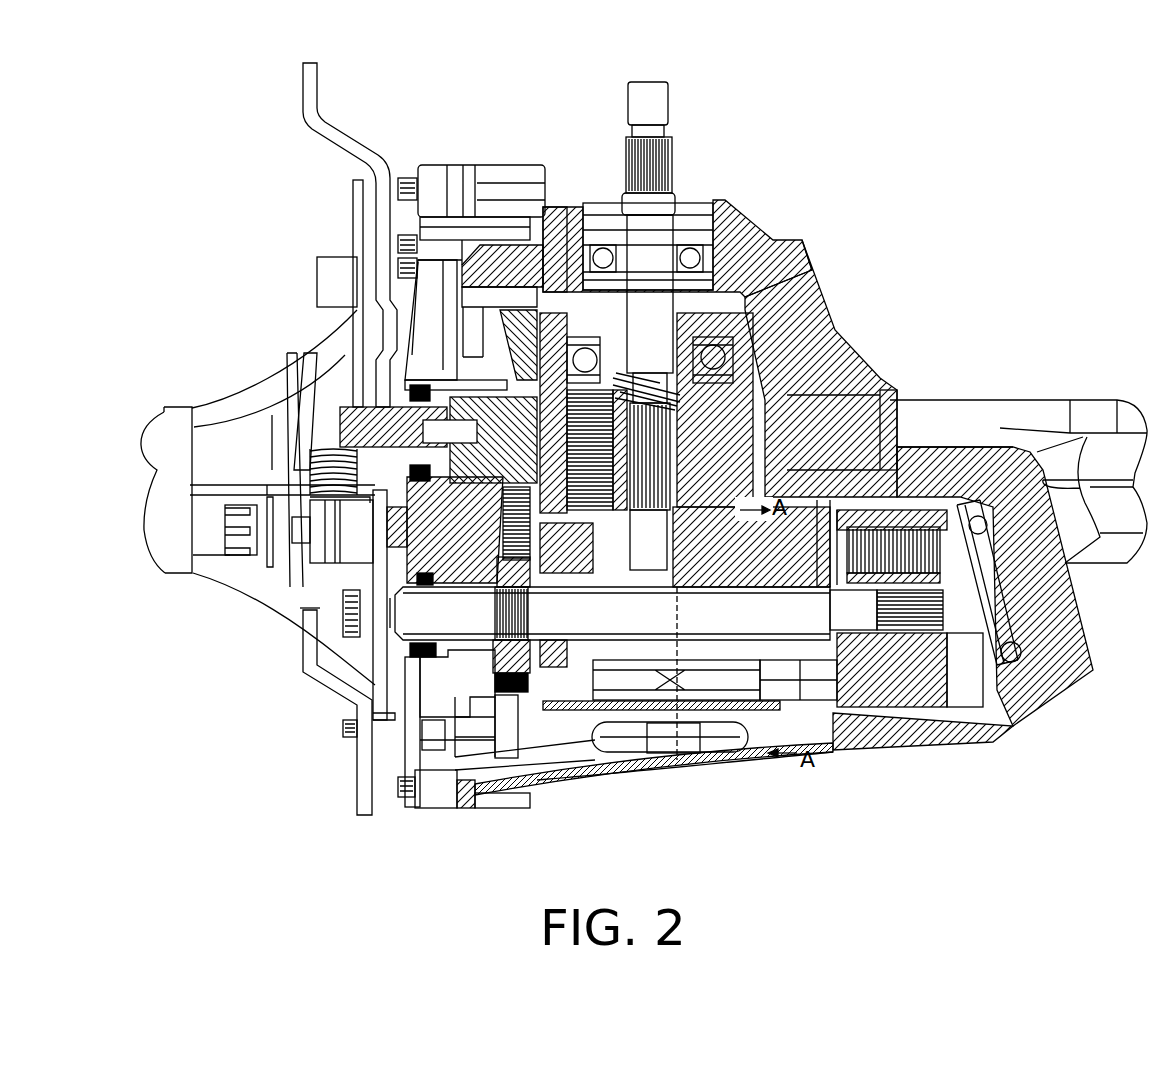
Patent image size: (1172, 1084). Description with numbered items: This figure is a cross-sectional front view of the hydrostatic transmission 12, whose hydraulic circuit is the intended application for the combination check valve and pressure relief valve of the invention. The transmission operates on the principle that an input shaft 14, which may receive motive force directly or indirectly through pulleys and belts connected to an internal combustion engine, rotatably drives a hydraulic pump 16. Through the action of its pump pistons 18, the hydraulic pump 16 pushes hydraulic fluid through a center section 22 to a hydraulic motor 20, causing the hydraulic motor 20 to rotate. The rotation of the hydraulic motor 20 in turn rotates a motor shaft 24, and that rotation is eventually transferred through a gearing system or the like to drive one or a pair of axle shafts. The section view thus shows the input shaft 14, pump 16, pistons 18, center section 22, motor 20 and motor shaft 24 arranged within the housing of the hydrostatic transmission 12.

The hydrostatic transmission 12 is at (781, 204).
The input shaft 14 is at (655, 108).
The hydraulic pump 16 is at (752, 383).
The pump pistons 18 is at (547, 227).
The hydraulic motor 20 is at (1003, 731).
The center section 22 is at (900, 425).
The motor shaft 24 is at (760, 627).